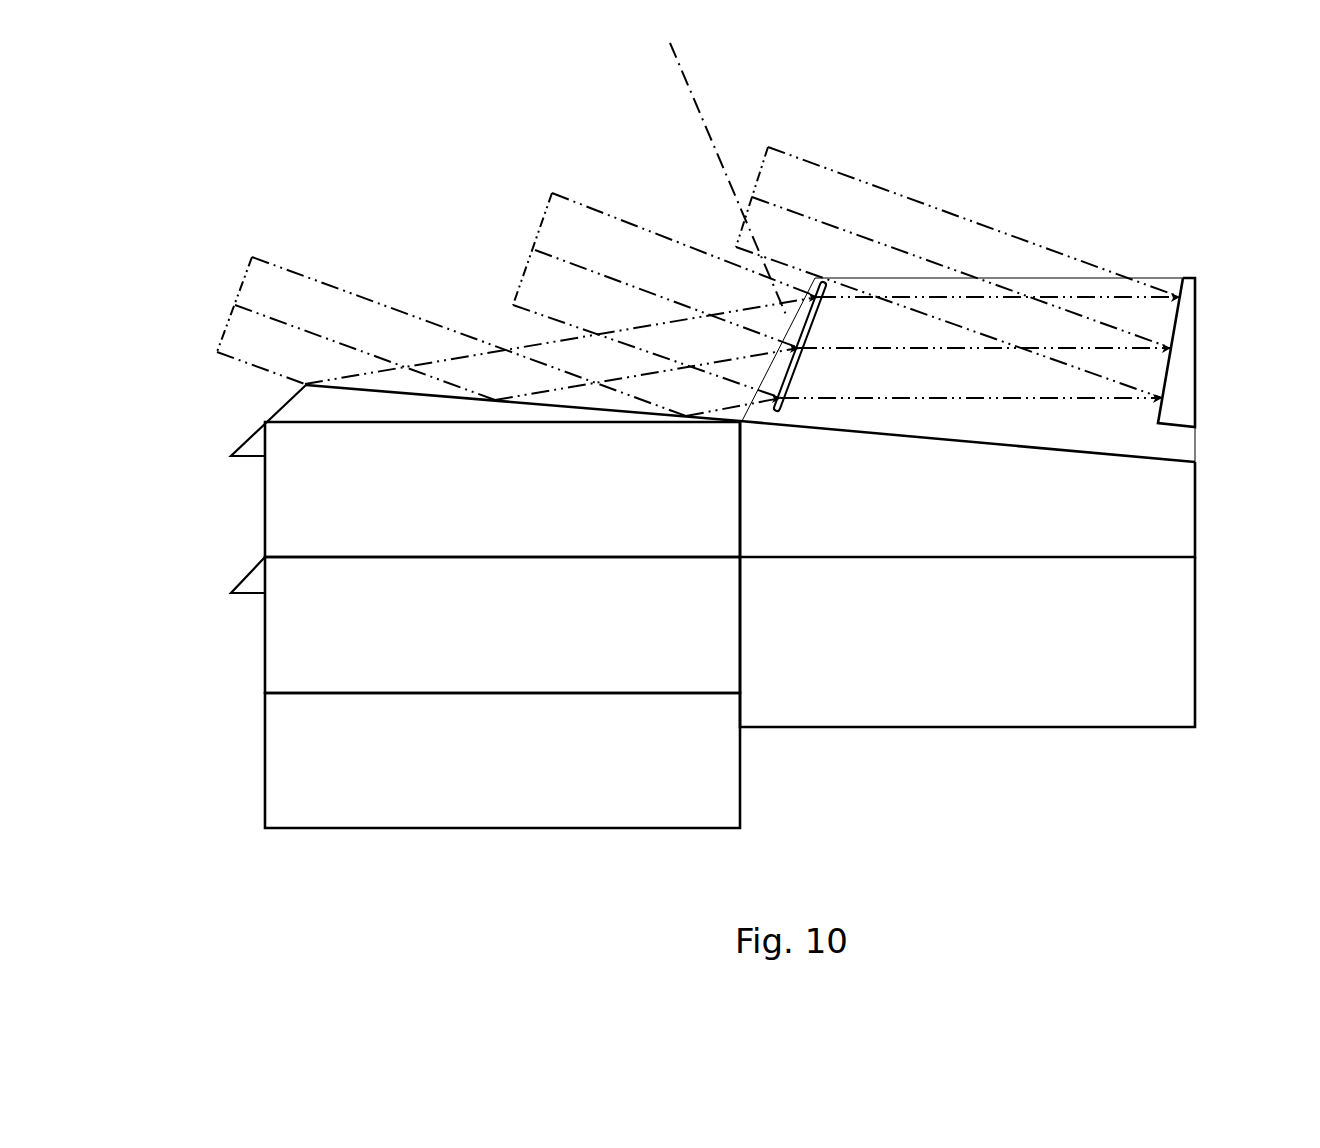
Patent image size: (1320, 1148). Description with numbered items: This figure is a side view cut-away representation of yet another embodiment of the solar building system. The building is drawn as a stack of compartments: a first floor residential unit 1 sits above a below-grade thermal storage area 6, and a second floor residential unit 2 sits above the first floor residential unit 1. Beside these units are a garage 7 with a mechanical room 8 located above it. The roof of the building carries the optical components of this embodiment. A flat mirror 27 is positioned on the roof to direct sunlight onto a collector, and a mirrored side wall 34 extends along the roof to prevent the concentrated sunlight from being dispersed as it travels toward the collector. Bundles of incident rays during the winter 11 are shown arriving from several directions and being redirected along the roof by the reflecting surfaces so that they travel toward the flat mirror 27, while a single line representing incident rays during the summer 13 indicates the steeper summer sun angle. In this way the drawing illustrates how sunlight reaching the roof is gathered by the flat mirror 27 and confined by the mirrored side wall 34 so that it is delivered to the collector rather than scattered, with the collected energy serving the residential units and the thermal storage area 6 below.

The first floor residential unit 1 is at (374, 592).
The second floor residential unit 2 is at (374, 456).
The below-grade thermal storage area 6 is at (372, 729).
The garage 7 is at (1092, 682).
The mechanical room 8 is at (772, 472).
The incident rays during the winter 11 is at (217, 352).
The incident rays during the summer 13 is at (707, 117).
The flat mirror 27 is at (1168, 363).
The mirrored side wall 34 is at (1035, 278).